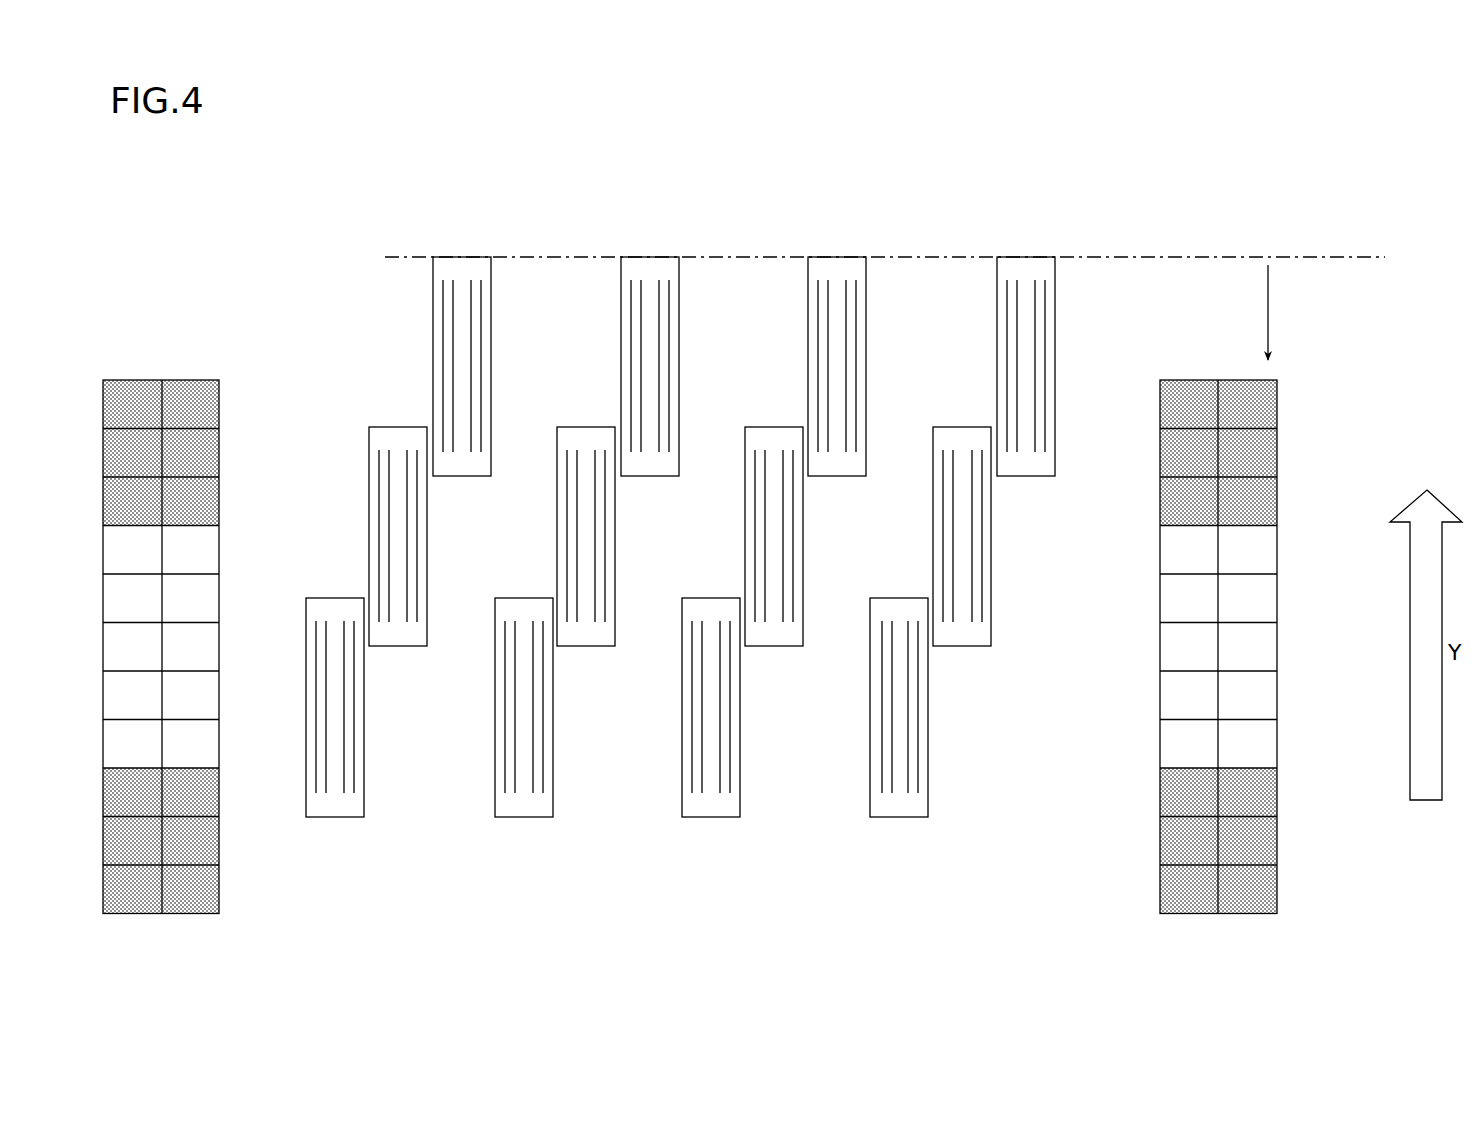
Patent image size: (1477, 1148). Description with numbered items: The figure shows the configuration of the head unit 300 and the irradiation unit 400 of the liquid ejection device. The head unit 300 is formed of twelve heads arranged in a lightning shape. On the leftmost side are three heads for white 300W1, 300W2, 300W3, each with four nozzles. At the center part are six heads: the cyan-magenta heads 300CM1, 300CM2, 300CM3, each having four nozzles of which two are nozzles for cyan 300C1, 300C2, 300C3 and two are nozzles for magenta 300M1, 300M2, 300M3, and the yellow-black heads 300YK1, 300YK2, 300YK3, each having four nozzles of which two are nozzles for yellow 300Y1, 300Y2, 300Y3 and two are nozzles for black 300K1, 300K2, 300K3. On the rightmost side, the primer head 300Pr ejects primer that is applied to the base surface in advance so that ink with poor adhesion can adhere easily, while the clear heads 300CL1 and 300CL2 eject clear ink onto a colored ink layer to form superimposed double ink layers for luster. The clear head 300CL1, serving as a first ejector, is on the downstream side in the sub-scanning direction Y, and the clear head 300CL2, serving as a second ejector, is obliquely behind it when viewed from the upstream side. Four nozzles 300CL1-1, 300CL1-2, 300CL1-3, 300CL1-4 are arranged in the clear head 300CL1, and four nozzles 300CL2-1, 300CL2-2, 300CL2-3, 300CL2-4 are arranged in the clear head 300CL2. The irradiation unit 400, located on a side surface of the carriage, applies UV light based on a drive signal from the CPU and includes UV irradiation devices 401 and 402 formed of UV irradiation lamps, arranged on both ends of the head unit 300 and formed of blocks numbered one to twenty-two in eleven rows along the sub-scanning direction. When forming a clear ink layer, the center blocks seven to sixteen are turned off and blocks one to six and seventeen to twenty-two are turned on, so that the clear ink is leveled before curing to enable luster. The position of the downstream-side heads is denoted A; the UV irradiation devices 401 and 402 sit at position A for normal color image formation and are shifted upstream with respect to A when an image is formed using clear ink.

The head unit 300 is at (735, 178).
The irradiation unit 400 is at (1200, 220).
The UV irradiation device 401 is at (183, 380).
The UV irradiation device 402 is at (1187, 380).
The position A is at (896, 258).
The head for white 300W1 is at (433, 296).
The head for white 300W2 is at (369, 459).
The head for white 300W3 is at (325, 598).
The cyan-magenta head 300CM1 is at (651, 339).
The cyan-magenta head 300CM2 is at (587, 509).
The cyan-magenta head 300CM3 is at (524, 680).
The nozzles for cyan 300C1 is at (631, 296).
The nozzles for cyan 300C2 is at (567, 494).
The nozzles for cyan 300C3 is at (505, 673).
The nozzles for magenta 300M1 is at (669, 296).
The nozzles for magenta 300M2 is at (605, 492).
The nozzles for magenta 300M3 is at (543, 672).
The yellow-black head 300YK1 is at (832, 339).
The yellow-black head 300YK2 is at (775, 509).
The yellow-black head 300YK3 is at (712, 680).
The nozzles for yellow 300Y1 is at (808, 328).
The nozzles for yellow 300Y2 is at (755, 521).
The nozzles for yellow 300Y3 is at (692, 720).
The nozzles for black 300K1 is at (856, 296).
The nozzles for black 300K2 is at (793, 496).
The nozzles for black 300K3 is at (730, 672).
The primer head 300Pr is at (1023, 257).
The clear head 300CL1 is at (1008, 544).
The nozzle 300CL1-1 is at (943, 614).
The nozzle 300CL1-2 is at (953, 614).
The nozzle 300CL1-3 is at (972, 545).
The nozzle 300CL1-4 is at (982, 495).
The clear head 300CL2 is at (947, 715).
The nozzle 300CL2-1 is at (882, 785).
The nozzle 300CL2-2 is at (892, 785).
The nozzle 300CL2-3 is at (908, 772).
The nozzle 300CL2-4 is at (918, 733).